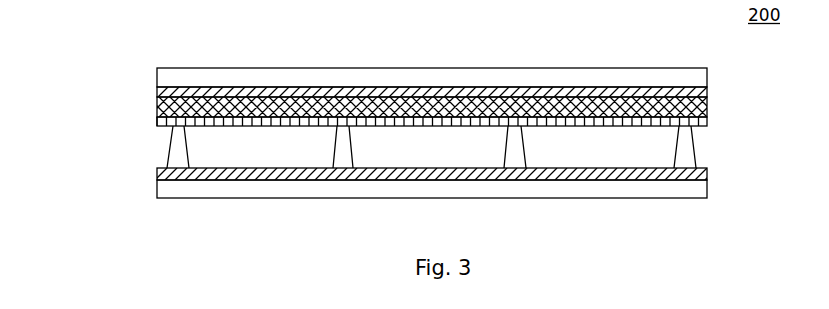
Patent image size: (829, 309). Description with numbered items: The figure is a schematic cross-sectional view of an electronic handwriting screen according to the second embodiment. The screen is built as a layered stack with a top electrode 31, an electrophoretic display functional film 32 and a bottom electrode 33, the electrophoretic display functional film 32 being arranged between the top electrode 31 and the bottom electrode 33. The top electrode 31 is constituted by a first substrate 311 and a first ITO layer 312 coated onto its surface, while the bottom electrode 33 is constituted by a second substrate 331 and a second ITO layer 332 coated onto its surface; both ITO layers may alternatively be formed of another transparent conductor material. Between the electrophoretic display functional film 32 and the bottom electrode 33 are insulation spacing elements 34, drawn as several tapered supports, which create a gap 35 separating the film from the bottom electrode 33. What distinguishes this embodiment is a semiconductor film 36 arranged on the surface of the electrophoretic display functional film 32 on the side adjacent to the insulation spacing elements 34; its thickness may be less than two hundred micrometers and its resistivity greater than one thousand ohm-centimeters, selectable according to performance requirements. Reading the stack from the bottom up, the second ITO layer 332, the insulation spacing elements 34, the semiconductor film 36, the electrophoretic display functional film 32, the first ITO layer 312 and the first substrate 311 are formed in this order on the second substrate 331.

The top electrode 31 is at (57, 68).
The first substrate 311 is at (163, 79).
The first ITO layer 312 is at (163, 95).
The electrophoretic display functional film 32 is at (707, 97).
The semiconductor film 36 is at (705, 122).
The insulation spacing elements 34 is at (688, 158).
The gap 35 is at (608, 160).
The bottom electrode 33 is at (57, 166).
The second substrate 331 is at (163, 175).
The second ITO layer 332 is at (163, 196).